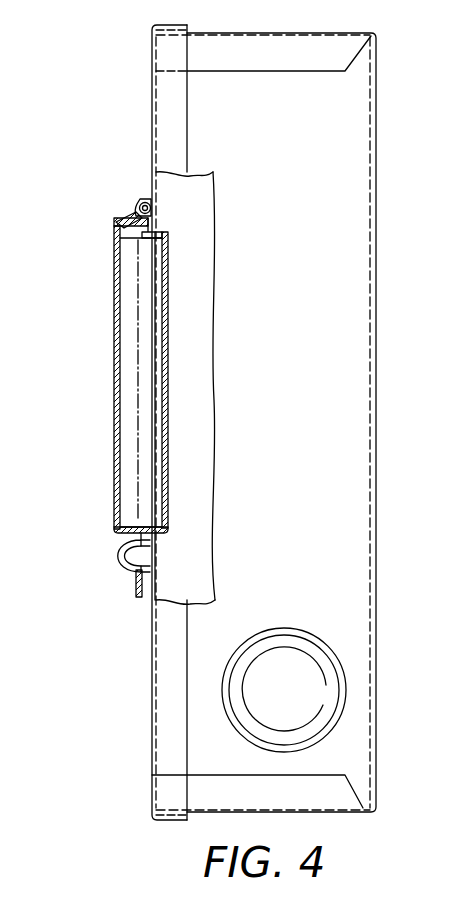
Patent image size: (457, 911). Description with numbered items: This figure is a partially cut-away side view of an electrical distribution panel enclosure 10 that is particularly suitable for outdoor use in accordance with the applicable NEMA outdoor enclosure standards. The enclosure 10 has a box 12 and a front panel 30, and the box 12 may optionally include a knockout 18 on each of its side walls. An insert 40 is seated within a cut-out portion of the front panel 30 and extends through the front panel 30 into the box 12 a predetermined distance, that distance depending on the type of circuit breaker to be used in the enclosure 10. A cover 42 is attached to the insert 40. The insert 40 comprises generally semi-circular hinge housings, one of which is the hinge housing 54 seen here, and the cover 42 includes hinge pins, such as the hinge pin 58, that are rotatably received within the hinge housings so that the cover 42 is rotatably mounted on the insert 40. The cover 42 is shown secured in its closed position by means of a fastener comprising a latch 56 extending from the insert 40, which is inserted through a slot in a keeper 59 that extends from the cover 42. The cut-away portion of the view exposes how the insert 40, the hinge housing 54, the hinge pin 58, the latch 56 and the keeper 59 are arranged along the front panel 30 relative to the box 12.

The electrical distribution panel enclosure 10 is at (111, 95).
The box 12 is at (293, 388).
The knockout 18 is at (310, 705).
The front panel 30 is at (151, 135).
The insert 40 is at (160, 398).
The cover 42 is at (114, 338).
The hinge housing 54 is at (147, 200).
The latch 56 is at (118, 554).
The hinge pin 58 is at (136, 209).
The keeper 59 is at (136, 586).